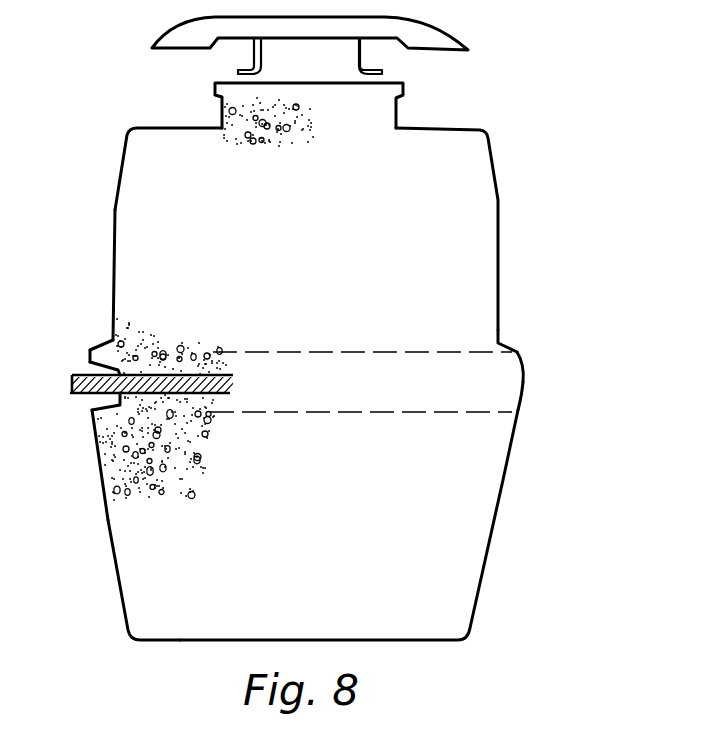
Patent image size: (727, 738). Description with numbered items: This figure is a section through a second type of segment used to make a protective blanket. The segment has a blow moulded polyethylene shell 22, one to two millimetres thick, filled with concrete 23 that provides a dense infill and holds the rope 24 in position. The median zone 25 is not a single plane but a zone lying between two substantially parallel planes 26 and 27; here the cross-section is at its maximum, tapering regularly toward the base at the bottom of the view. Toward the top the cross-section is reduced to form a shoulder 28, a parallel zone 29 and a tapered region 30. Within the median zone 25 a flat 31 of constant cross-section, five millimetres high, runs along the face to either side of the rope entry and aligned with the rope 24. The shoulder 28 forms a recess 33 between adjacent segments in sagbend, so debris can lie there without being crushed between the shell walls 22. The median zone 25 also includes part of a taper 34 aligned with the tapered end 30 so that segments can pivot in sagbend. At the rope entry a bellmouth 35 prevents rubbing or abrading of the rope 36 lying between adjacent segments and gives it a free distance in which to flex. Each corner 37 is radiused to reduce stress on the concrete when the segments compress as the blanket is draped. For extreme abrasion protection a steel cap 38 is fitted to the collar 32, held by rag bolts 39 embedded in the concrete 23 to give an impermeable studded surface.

The shell 22 is at (486, 577).
The concrete 23 is at (170, 455).
The rope 24 is at (228, 385).
The median zone 25 is at (405, 393).
The plane 26 is at (425, 350).
The plane 27 is at (410, 418).
The shoulder 28 is at (503, 343).
The parallel zone 29 is at (112, 268).
The tapered region 30 is at (120, 163).
The flat 31 is at (523, 390).
The collar 32 is at (408, 88).
The recess 33 is at (108, 340).
The taper 34 is at (90, 352).
The bellmouth 35 is at (100, 368).
The rope 36 is at (82, 394).
The corner 37 is at (132, 638).
The steel cap 38 is at (450, 42).
The rag bolt 39 is at (361, 72).